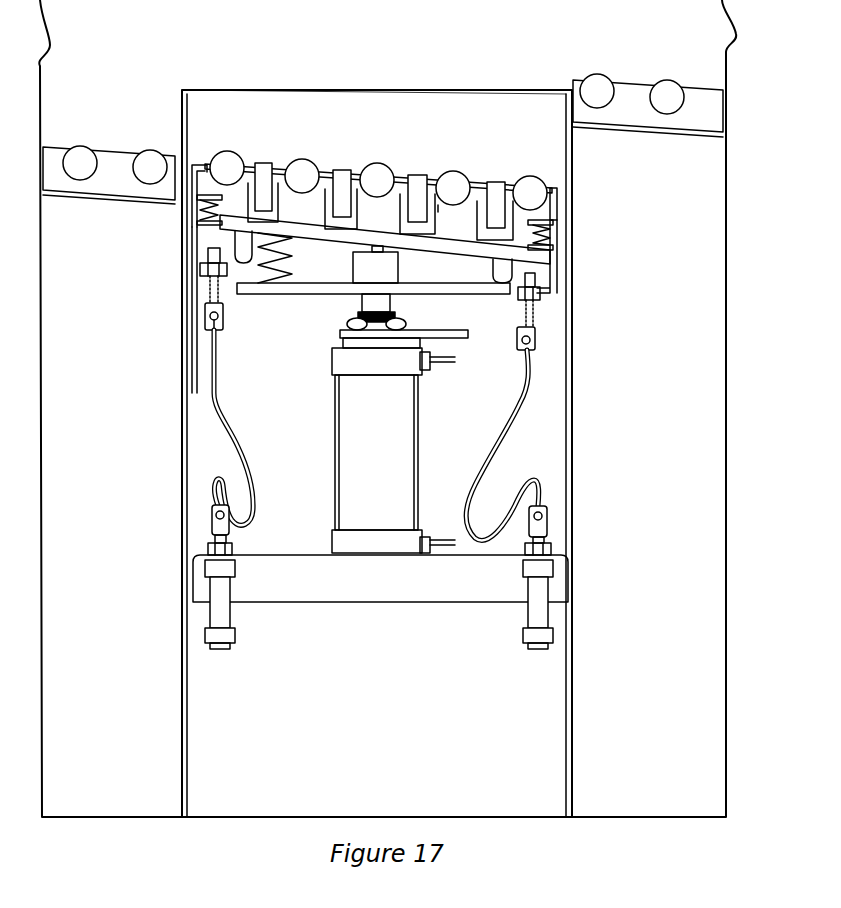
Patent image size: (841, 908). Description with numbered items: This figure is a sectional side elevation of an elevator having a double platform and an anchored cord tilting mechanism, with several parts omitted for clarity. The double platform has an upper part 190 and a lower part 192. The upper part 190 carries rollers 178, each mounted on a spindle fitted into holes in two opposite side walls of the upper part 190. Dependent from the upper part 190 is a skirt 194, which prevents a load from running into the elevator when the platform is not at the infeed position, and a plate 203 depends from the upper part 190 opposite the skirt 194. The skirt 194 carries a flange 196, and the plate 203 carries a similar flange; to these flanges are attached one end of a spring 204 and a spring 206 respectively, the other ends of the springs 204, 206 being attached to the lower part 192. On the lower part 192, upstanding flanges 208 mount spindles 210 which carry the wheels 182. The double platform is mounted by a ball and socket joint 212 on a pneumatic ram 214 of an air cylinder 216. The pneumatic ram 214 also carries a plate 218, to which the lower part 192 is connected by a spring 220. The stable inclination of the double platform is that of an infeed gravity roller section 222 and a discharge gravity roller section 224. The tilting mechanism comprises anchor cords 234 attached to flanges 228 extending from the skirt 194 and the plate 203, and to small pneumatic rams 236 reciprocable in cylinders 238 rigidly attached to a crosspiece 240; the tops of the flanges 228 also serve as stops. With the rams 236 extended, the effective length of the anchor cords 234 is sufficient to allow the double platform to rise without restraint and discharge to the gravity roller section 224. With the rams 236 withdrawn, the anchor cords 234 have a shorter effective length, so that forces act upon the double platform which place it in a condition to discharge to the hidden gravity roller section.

The rollers 178 is at (530, 190).
The wheels 182 is at (495, 189).
The upper part 190 is at (195, 163).
The lower part 192 is at (476, 205).
The skirt 194 is at (190, 296).
The flange 196 is at (196, 198).
The plate 203 is at (557, 257).
The spring 204 is at (203, 214).
The spring 206 is at (557, 232).
The upstanding flanges 208 is at (282, 198).
The spindles 210 is at (438, 205).
The ball and socket joint 212 is at (365, 228).
The pneumatic ram 214 is at (375, 248).
The air cylinder 216 is at (398, 444).
The plate 218 is at (291, 290).
The spring 220 is at (267, 284).
The infeed gravity roller section 222 is at (118, 160).
The discharge gravity roller section 224 is at (615, 112).
The flanges 228 is at (200, 268).
The anchor cords 234 is at (218, 400).
The small pneumatic rams 236 is at (229, 533).
The cylinders 238 is at (222, 607).
The crosspiece 240 is at (285, 557).